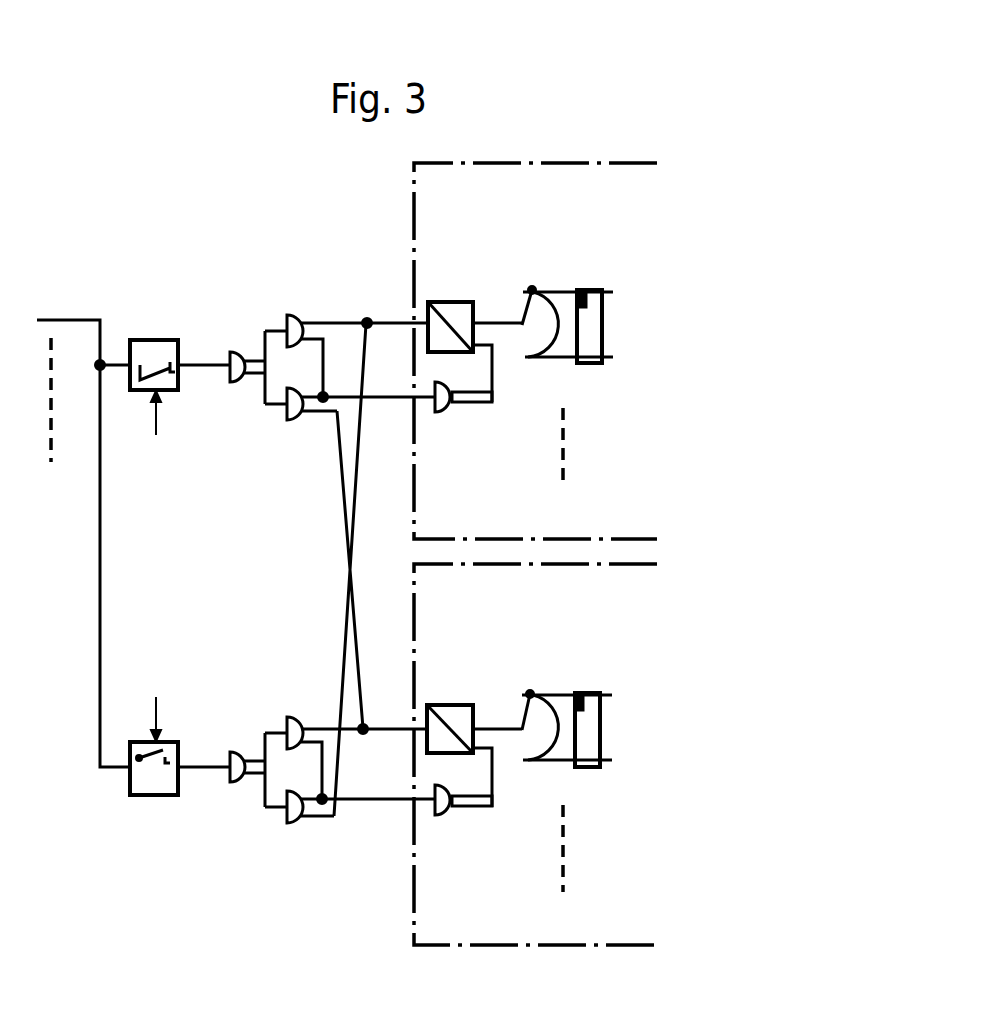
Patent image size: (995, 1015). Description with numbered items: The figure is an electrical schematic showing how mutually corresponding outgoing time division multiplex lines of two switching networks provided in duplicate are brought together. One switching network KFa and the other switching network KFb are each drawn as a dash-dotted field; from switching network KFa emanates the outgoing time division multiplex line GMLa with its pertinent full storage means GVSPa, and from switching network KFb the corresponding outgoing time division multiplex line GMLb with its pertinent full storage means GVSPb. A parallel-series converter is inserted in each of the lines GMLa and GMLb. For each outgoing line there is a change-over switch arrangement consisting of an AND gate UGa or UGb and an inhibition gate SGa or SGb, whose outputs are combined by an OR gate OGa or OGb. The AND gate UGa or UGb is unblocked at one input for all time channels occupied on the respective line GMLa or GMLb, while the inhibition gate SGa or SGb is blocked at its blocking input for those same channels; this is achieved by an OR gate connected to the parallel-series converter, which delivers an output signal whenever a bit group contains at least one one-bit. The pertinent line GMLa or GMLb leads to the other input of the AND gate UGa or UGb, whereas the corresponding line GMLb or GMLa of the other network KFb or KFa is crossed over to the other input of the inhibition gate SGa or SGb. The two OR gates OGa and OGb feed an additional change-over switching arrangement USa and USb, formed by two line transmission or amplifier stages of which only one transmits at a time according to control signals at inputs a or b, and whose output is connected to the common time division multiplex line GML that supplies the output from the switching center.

The time division multiplex line GML is at (83, 528).
The change-over switching arrangement USa is at (180, 388).
The change-over switching arrangement USb is at (180, 748).
The OR gate OGa is at (241, 362).
The OR gate OGb is at (246, 765).
The AND gate UGa is at (346, 343).
The AND gate UGb is at (346, 744).
The inhibition gate SGa is at (350, 422).
The inhibition gate SGb is at (350, 824).
The outgoing time division multiplex line GMLa is at (400, 322).
The outgoing time division multiplex line GMLb is at (488, 729).
The switching network KFa is at (535, 351).
The switching network KFb is at (535, 754).
The full storage means GVSPa is at (573, 375).
The full storage means GVSPb is at (575, 778).